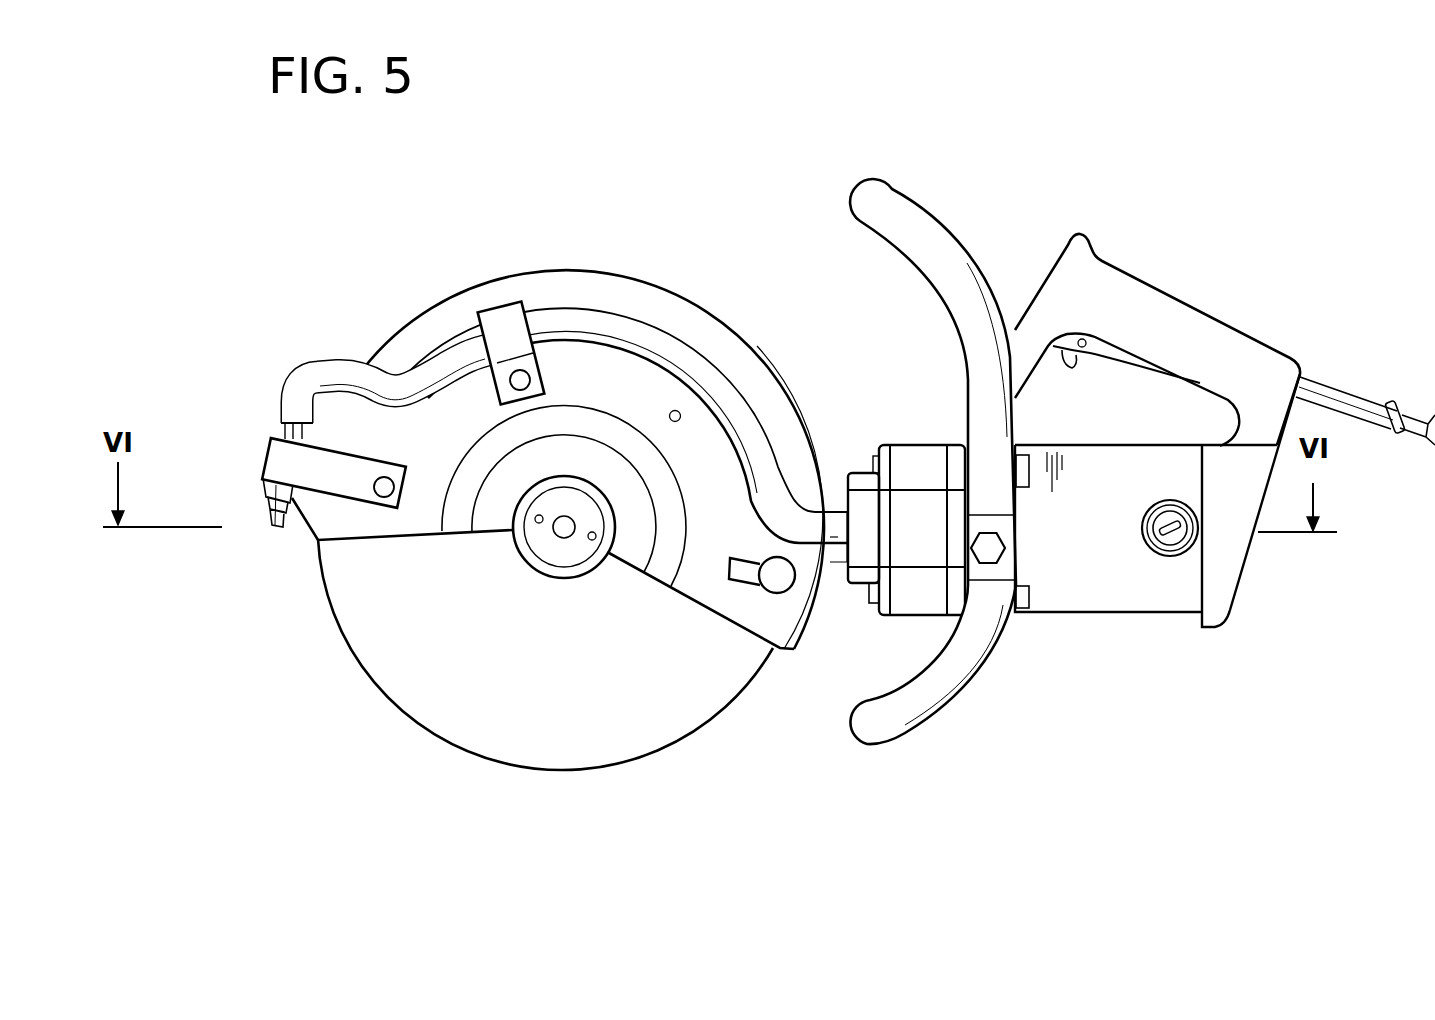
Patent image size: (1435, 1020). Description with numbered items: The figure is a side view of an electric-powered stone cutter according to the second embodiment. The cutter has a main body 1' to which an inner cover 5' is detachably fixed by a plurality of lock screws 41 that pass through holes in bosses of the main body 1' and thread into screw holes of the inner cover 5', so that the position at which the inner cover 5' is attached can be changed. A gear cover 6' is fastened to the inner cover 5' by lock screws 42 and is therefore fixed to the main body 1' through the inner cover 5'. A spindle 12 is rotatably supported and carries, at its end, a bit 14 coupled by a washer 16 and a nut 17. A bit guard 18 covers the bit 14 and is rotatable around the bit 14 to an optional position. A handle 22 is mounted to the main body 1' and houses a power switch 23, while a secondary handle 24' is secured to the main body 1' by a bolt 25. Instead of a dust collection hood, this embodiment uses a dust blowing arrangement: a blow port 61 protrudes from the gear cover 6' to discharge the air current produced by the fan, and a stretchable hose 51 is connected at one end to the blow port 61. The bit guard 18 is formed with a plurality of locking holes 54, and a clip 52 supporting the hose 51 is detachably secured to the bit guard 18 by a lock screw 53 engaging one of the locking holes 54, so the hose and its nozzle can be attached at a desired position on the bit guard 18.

The main body 1' is at (1157, 552).
The inner cover 5' is at (906, 483).
The gear cover 6' is at (854, 483).
The spindle 12 is at (551, 528).
The bit 14 is at (541, 757).
The washer 16 is at (527, 568).
The nut 17 is at (585, 565).
The bit guard 18 is at (619, 287).
The handle 22 is at (1202, 323).
The power switch 23 is at (1117, 356).
The secondary handle 24' is at (933, 428).
The bolt 25 is at (993, 545).
The lock screw 41 is at (1030, 598).
The lock screw 42 is at (866, 603).
The hose 51 is at (305, 380).
The clip 52 is at (502, 323).
The lock screw 53 is at (520, 380).
The locking hole 54 is at (680, 410).
The blow port 61 is at (839, 563).